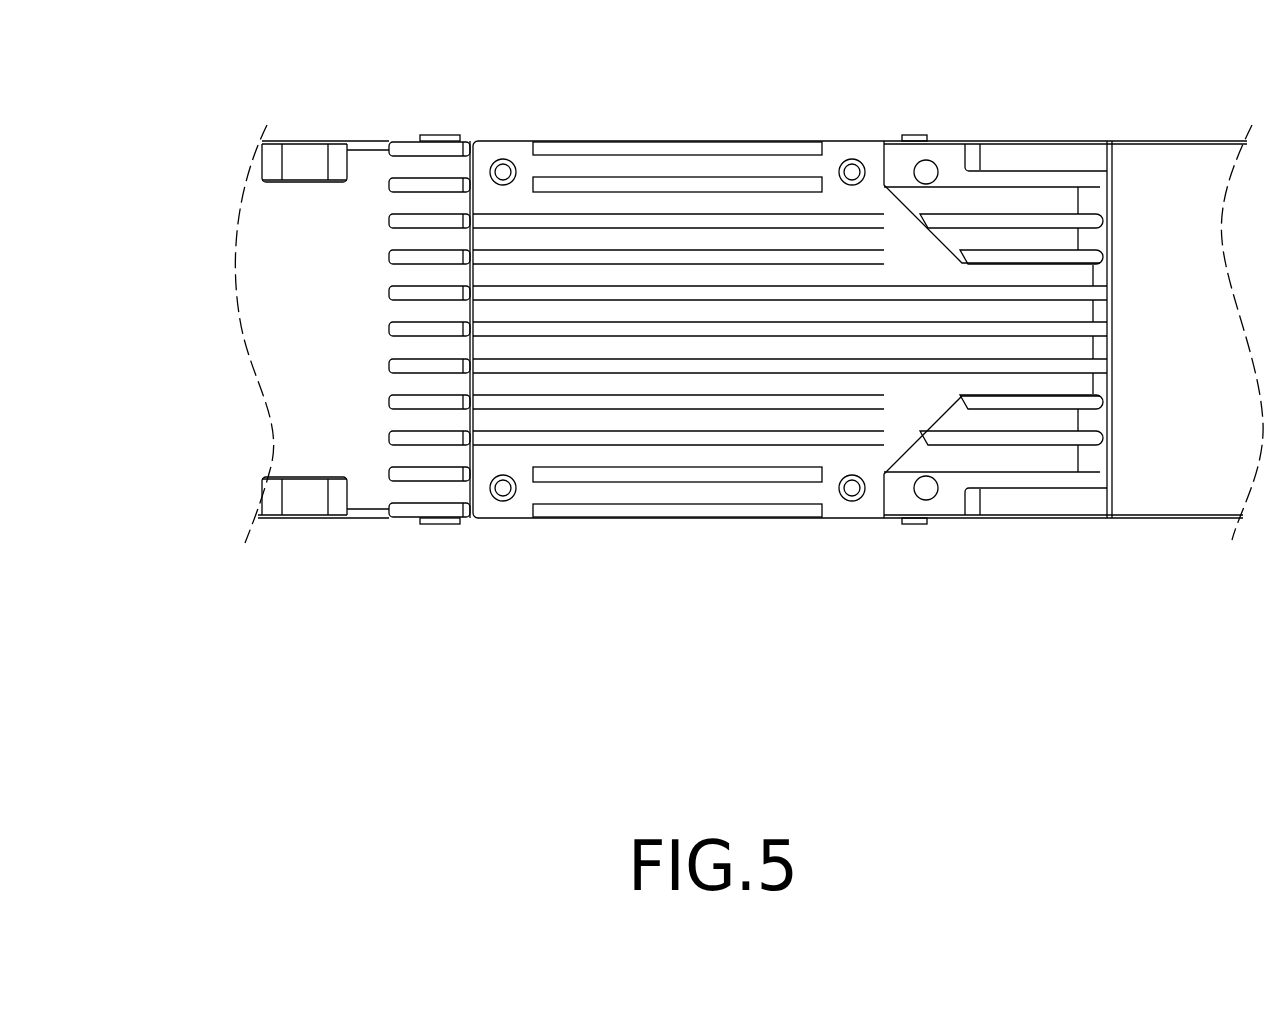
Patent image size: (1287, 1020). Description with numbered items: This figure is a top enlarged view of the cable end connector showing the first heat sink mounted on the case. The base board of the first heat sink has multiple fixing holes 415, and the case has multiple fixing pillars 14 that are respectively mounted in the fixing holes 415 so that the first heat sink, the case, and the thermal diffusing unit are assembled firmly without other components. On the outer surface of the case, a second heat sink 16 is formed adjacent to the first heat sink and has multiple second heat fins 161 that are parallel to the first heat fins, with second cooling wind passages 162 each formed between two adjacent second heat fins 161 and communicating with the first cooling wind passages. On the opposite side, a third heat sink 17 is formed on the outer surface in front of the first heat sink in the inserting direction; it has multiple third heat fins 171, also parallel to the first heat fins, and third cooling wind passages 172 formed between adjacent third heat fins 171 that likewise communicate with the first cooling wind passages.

The fixing pillar 14 is at (862, 162).
The second heat sink 16 is at (1043, 452).
The second heat fin 161 is at (1082, 220).
The second cooling wind passage 162 is at (1023, 202).
The third heat sink 17 is at (422, 210).
The third heat fin 171 is at (423, 478).
The third cooling wind passage 172 is at (400, 423).
The fixing hole 415 is at (850, 160).